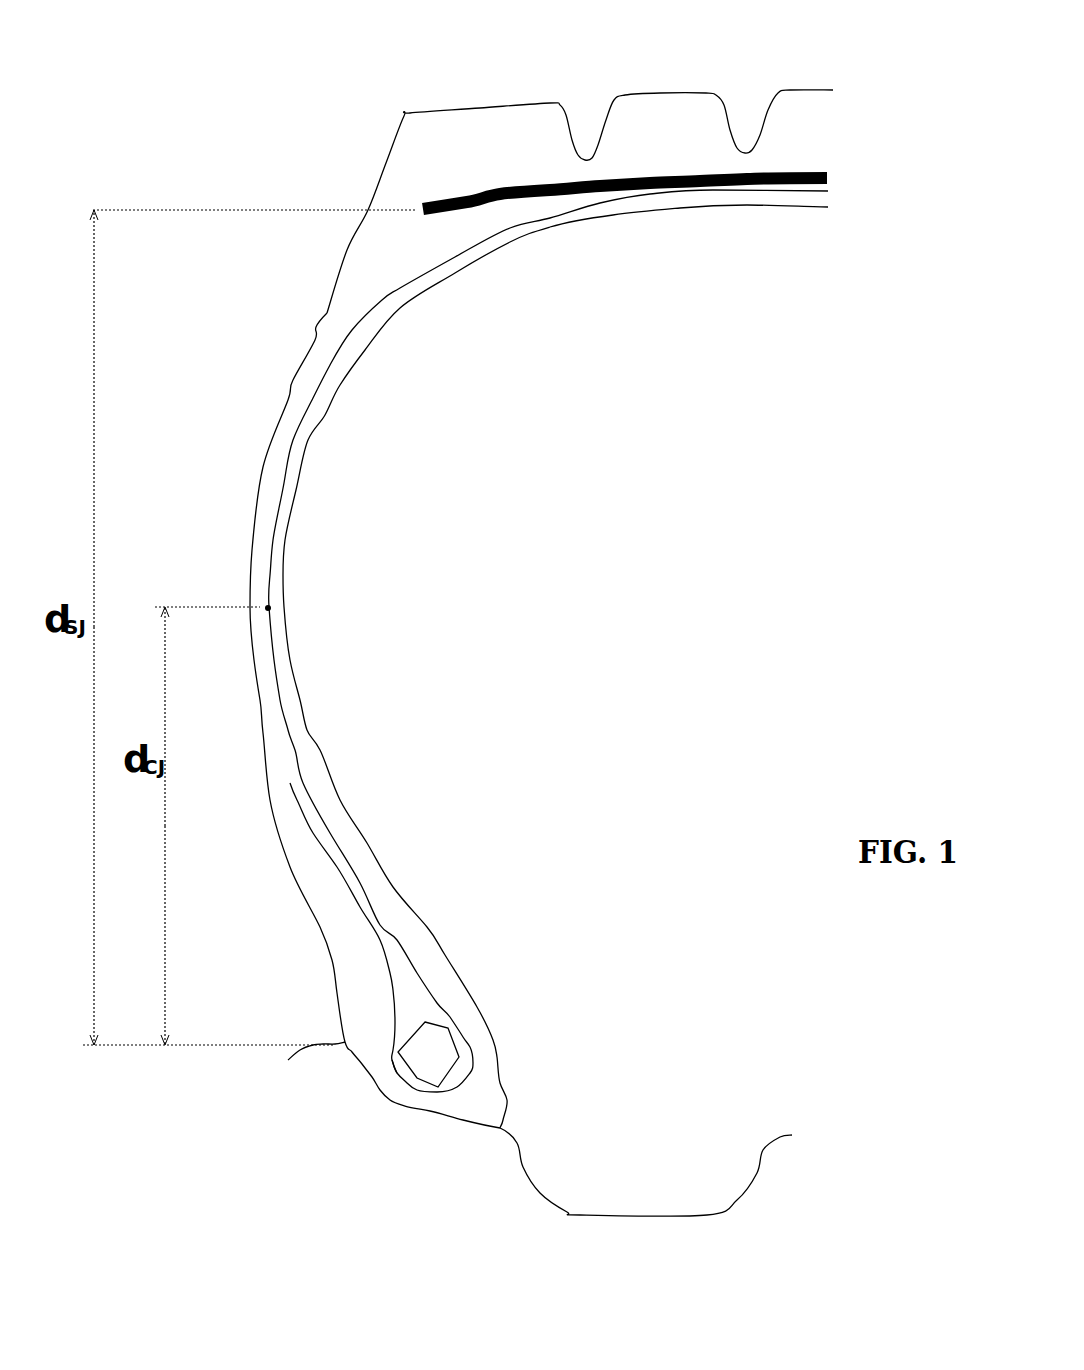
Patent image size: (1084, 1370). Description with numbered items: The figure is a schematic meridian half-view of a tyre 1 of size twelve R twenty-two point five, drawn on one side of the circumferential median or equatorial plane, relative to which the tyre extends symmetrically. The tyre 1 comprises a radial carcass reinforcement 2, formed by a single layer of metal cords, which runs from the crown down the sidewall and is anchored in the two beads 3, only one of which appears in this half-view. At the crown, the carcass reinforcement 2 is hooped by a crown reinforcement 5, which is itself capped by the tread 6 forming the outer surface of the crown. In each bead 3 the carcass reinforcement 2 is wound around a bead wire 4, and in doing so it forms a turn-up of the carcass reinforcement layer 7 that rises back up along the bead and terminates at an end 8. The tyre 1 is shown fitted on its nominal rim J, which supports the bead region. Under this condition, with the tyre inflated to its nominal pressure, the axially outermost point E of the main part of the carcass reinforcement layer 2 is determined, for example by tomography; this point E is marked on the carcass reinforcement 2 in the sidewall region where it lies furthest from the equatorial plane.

The tyre 1 is at (342, 243).
The radial carcass reinforcement 2 is at (295, 733).
The bead 3 is at (475, 962).
The bead wire 4 is at (420, 1055).
The crown reinforcement 5 is at (807, 183).
The tread 6 is at (655, 130).
The turn-up of the carcass reinforcement layer 7 is at (355, 917).
The end of the turn-up 8 is at (290, 783).
The axially outermost point of the main part of the carcass reinforcement layer E is at (268, 608).
The nominal rim J is at (357, 1085).